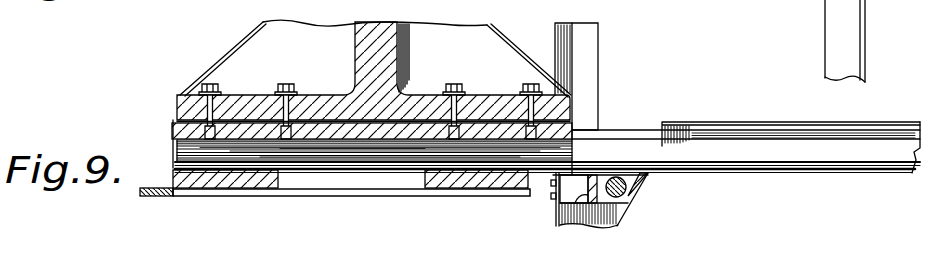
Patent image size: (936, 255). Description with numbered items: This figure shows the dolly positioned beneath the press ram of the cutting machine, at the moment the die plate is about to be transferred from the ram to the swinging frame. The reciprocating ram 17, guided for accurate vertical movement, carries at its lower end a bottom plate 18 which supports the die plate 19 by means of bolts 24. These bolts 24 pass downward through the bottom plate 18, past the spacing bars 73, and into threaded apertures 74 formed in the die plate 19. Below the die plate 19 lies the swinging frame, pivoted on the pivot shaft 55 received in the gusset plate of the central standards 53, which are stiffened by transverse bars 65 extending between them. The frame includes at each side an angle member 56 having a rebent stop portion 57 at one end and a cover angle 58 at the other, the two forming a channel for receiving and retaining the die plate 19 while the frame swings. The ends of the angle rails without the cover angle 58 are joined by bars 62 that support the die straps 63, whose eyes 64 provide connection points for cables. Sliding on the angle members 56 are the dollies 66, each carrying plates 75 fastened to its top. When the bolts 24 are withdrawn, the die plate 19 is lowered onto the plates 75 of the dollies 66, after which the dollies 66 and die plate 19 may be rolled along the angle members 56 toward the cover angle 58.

The reciprocating ram 17 is at (246, 54).
The bottom plate 18 is at (180, 99).
The die plate 19 is at (176, 128).
The bolts 24 is at (283, 86).
The central standards 53 is at (831, 9).
The pivot shaft 55 is at (587, 33).
The angle member 56 is at (705, 113).
The rebent stop portion 57 is at (176, 141).
The cover angle 58 is at (747, 122).
The bars 62 is at (233, 188).
The die straps 63 is at (333, 194).
The eyes 64 is at (157, 196).
The transverse bars 65 is at (619, 212).
The dollies 66 is at (388, 149).
The spacing bars 73 is at (569, 103).
The threaded apertures 74 is at (173, 117).
The plates 75 is at (193, 143).